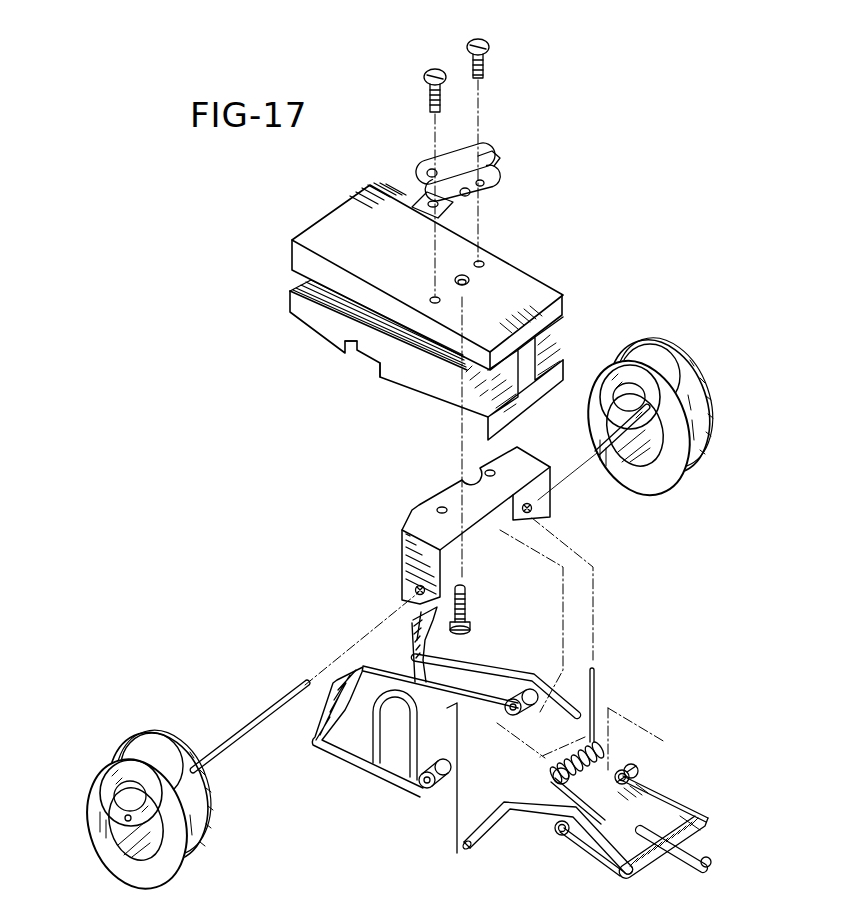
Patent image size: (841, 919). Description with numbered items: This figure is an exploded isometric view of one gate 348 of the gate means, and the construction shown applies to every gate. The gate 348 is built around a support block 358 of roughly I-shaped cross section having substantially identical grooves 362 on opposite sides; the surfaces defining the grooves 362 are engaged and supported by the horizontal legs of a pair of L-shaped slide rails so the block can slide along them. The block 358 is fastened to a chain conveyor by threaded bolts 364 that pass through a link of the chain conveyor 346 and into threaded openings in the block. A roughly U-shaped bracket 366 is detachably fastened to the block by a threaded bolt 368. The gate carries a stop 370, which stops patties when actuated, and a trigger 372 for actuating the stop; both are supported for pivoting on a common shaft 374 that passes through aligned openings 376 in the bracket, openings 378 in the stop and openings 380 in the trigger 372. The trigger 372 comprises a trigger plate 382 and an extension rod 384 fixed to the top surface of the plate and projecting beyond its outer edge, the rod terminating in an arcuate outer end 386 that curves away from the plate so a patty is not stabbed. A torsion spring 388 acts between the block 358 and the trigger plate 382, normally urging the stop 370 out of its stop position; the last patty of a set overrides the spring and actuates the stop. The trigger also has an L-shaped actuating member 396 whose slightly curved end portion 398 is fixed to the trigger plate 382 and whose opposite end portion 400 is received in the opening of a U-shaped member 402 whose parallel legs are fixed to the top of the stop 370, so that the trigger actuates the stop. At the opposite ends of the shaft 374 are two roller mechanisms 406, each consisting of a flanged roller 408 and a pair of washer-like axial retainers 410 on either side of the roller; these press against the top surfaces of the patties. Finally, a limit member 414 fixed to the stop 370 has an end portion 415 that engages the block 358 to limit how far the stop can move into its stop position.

The chain conveyor link 346 is at (492, 173).
The gate 348 is at (345, 475).
The support block 358 is at (330, 215).
The grooves 362 is at (390, 348).
The threaded bolts 364 is at (468, 47).
The U-shaped bracket 366 is at (442, 490).
The threaded bolt 368 is at (470, 597).
The stop 370 is at (423, 720).
The trigger 372 is at (657, 827).
The shaft 374 is at (590, 435).
The openings in the bracket 376 is at (416, 588).
The openings in the stop 378 is at (517, 699).
The openings in the trigger 380 is at (637, 775).
The trigger plate 382 is at (692, 812).
The extension rod 384 is at (683, 870).
The arcuate outer end 386 is at (710, 859).
The spring 388 is at (550, 760).
The L-shaped actuating member 396 is at (534, 860).
The end portion 398 is at (617, 872).
The end portion 400 is at (468, 848).
The U-shaped member 402 is at (363, 760).
The roller mechanism 406 is at (690, 368).
The flanged roller 408 is at (695, 413).
The axial retainers 410 is at (637, 345).
The limit member 414 is at (463, 663).
The end portion 415 is at (589, 668).